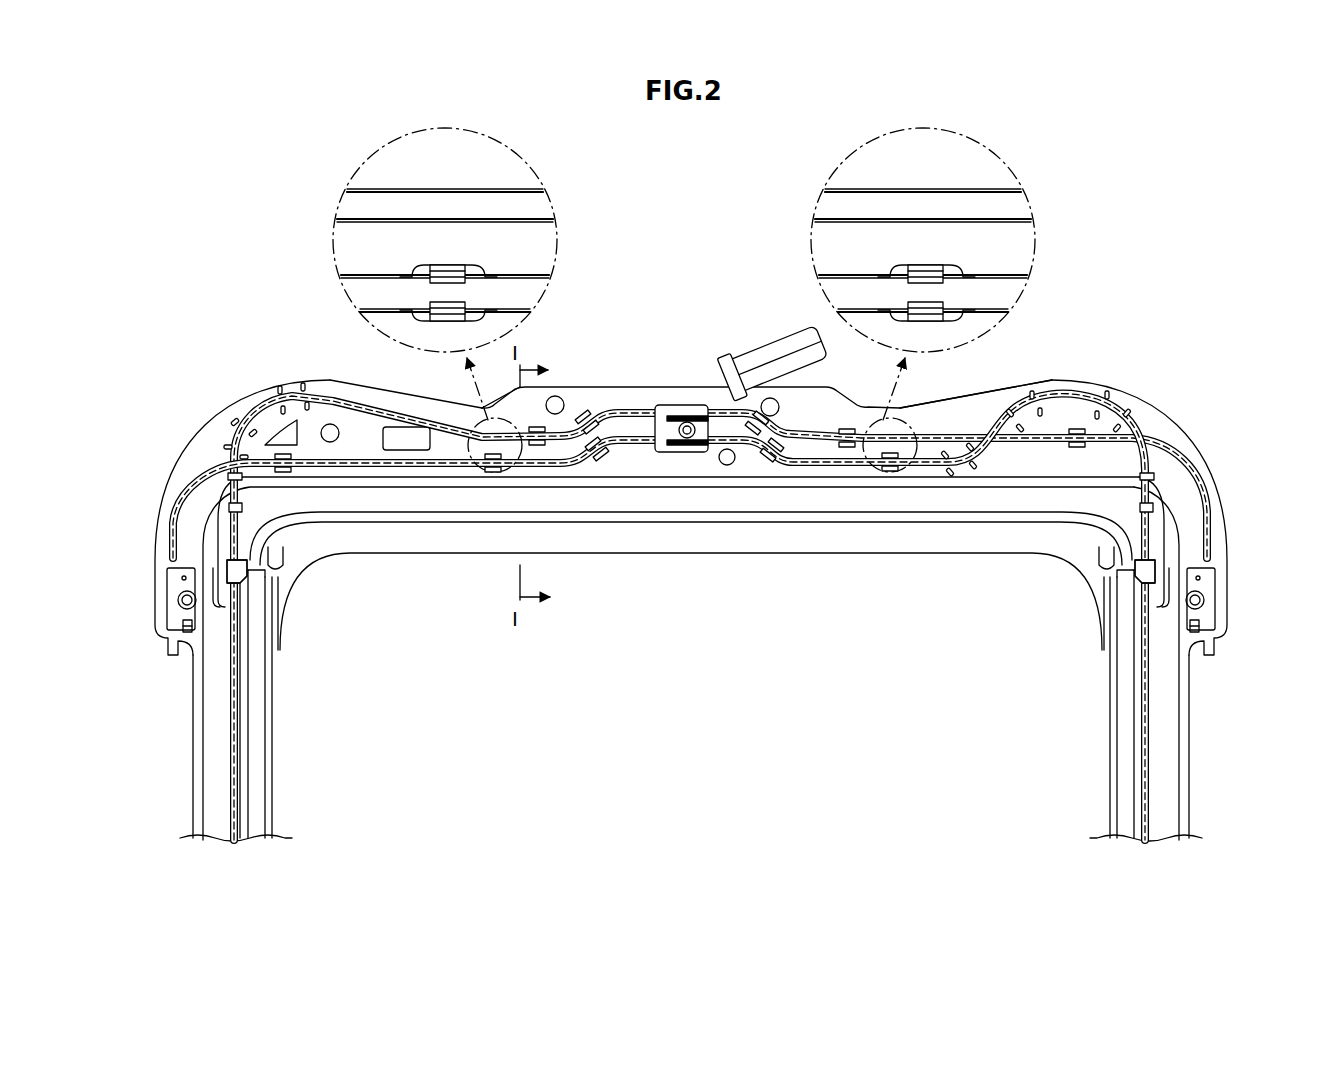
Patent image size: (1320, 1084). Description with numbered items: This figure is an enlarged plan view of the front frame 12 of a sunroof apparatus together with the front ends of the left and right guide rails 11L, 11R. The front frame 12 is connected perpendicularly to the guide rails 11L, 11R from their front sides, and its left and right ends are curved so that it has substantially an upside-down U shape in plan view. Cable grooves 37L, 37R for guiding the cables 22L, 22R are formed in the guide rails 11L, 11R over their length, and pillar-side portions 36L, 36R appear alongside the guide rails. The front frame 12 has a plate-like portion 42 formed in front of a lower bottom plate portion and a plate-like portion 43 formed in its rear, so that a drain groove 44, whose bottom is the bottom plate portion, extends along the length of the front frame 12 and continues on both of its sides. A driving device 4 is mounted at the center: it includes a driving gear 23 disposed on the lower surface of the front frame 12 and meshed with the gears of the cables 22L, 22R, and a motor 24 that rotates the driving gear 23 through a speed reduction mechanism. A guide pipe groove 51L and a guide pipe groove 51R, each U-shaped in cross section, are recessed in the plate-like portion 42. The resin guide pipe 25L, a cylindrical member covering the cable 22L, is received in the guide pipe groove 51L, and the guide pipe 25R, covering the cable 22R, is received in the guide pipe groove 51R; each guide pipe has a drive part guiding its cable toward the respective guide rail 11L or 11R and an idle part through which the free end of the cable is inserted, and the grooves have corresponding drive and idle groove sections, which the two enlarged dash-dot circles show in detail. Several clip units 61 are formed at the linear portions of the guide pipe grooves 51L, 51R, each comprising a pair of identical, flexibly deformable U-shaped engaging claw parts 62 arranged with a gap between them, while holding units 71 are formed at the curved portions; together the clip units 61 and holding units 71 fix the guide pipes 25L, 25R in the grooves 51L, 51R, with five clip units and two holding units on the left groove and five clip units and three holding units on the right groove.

The driving device 4 is at (690, 385).
The left guide rail 11L is at (275, 725).
The right guide rail 11R is at (1107, 725).
The front frame 12 is at (993, 390).
The left cable 22L is at (260, 390).
The right cable 22R is at (1150, 432).
The driving gear 23 is at (660, 428).
The motor 24 is at (797, 365).
The left guide pipe 25L is at (548, 220).
The right guide pipe 25R is at (545, 312).
The left pillar panel 36L is at (232, 733).
The right pillar panel 36R is at (1150, 733).
The left cable groove 37L is at (238, 700).
The right cable groove 37R is at (1144, 700).
The plate-like portion 42 is at (592, 393).
The plate-like portion 43 is at (568, 553).
The drain groove 44 is at (437, 503).
The guide pipe groove 51L is at (350, 396).
The guide pipe groove 51R is at (378, 472).
The clip unit 61 is at (447, 262).
The engaging claw part 62 is at (440, 275).
The holding unit 71 is at (283, 392).